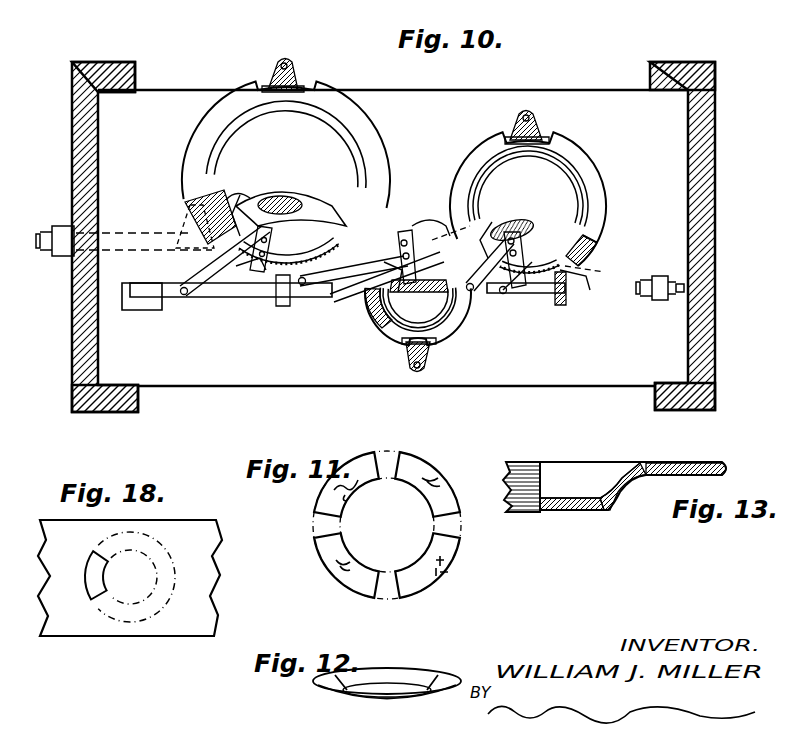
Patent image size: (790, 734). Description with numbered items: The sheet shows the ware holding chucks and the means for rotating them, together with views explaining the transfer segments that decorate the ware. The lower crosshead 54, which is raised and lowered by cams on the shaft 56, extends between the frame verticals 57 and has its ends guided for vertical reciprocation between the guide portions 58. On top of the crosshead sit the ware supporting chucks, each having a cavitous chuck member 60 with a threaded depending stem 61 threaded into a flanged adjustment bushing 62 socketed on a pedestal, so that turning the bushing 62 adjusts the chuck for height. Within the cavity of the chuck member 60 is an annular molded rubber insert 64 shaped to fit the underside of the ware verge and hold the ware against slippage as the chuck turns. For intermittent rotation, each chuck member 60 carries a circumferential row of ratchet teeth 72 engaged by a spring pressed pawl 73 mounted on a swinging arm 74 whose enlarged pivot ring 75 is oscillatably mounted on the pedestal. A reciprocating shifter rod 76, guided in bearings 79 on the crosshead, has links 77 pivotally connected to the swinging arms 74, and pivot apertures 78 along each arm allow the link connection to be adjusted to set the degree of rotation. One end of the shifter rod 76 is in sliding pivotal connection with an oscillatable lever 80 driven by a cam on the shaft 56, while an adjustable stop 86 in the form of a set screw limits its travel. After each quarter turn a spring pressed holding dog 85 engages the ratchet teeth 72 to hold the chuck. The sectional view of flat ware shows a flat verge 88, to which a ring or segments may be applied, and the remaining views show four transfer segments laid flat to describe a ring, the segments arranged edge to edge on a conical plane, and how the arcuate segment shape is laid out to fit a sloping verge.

In FIG. 10, the lower crosshead 54 is at (225, 386).
In FIG. 10, the shaft 56 is at (50, 236).
In FIG. 10, the frame verticals 57 is at (718, 115).
In FIG. 10, the guide portions 58 is at (118, 78).
In FIG. 10, the chuck member 60 is at (194, 196).
In FIG. 10, the threaded depending stem 61 is at (284, 198).
In FIG. 10, the flanged adjustment bushing 62 is at (188, 215).
In FIG. 10, the annular molded rubber insert 64 is at (380, 150).
In FIG. 10, the ratchet teeth 72 is at (326, 280).
In FIG. 10, the spring pressed pawl 73 is at (263, 300).
In FIG. 10, the swinging arm 74 is at (546, 224).
In FIG. 10, the pivot ring 75 is at (244, 196).
In FIG. 10, the shifter rod 76 is at (210, 300).
In FIG. 10, the links 77 is at (242, 252).
In FIG. 10, the pivot apertures 78 is at (436, 190).
In FIG. 10, the bearings 79 is at (284, 306).
In FIG. 10, the oscillatable lever 80 is at (146, 310).
In FIG. 10, the spring pressed holding dog 85 is at (276, 68).
In FIG. 10, the adjustable stop 86 is at (648, 280).
In FIG. 13, the flat verge 88 is at (686, 464).